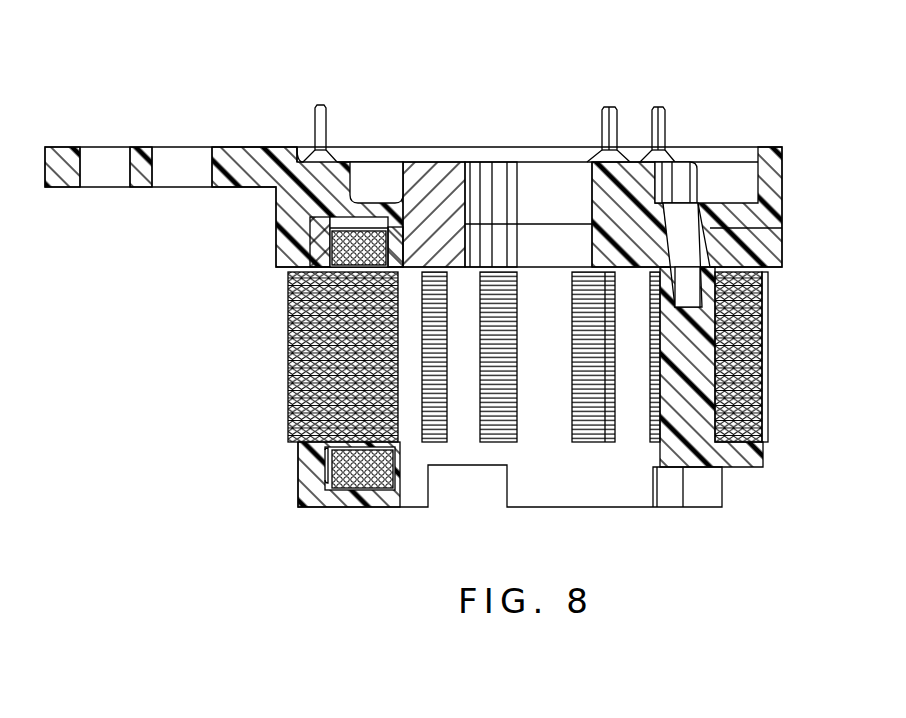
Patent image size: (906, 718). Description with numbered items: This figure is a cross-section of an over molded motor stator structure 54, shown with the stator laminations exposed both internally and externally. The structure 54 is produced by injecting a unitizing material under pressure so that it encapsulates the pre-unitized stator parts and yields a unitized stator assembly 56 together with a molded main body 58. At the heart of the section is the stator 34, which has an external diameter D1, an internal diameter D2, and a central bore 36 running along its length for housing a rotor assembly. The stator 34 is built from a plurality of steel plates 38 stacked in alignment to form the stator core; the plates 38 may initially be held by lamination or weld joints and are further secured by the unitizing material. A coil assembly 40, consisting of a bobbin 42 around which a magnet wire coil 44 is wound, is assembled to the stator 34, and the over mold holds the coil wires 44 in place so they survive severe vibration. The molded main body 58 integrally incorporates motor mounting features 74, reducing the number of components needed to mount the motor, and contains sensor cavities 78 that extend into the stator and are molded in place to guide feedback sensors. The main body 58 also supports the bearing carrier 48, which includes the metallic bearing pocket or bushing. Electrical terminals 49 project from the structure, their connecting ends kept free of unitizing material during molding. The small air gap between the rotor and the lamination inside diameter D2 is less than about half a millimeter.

The over molded motor stator structure 54 is at (72, 104).
The motor mounting features 74 is at (103, 187).
The molded main body 58 is at (256, 147).
The bearing carrier 48 is at (456, 162).
The electrical terminals 49 is at (665, 108).
The sensor cavities 78 is at (698, 215).
The unitized stator assembly 56 is at (773, 310).
The stator 34 is at (288, 348).
The steel plates 38 is at (772, 382).
The central bore 36 is at (410, 423).
The coil assembly 40 is at (328, 463).
The bobbin 42 is at (325, 480).
The magnet wire coil 44 is at (345, 482).
The external diameter D1 is at (770, 412).
The internal diameter D2 is at (605, 434).